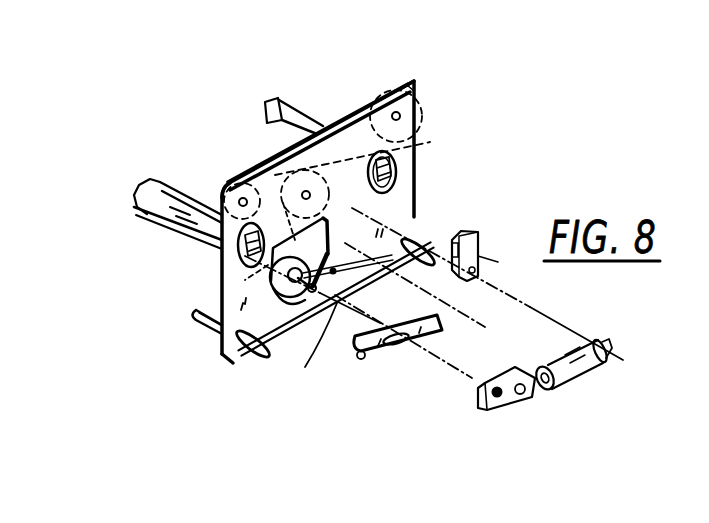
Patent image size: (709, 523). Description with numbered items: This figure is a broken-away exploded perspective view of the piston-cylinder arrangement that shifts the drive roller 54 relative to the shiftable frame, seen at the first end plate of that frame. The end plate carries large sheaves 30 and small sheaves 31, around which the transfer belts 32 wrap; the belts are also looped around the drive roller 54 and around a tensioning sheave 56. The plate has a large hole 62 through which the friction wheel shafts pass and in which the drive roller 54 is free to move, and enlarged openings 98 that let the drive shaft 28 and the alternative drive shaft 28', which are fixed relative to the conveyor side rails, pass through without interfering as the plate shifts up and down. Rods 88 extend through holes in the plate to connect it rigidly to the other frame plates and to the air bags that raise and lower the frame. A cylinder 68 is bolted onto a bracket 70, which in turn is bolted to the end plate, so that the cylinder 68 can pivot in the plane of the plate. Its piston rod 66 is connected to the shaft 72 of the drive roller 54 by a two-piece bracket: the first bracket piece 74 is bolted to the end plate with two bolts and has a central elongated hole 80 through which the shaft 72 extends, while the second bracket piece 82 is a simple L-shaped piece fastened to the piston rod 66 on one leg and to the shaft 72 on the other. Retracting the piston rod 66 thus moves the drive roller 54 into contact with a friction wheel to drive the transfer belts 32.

The drive shaft 28 is at (320, 222).
The alternative drive shaft 28' is at (141, 211).
The large sheaves 30 is at (223, 190).
The small sheaves 31 is at (327, 127).
The transfer belts 32 is at (353, 108).
The drive roller 54 is at (176, 238).
The tensioning sheave 56 is at (362, 217).
The hole 62 is at (336, 298).
The piston rod 66 is at (546, 387).
The cylinder 68 is at (583, 365).
The bracket 70 is at (478, 235).
The shaft of the drive roller 72 is at (309, 349).
The first bracket piece 74 is at (447, 313).
The central elongated hole 80 is at (398, 352).
The second bracket piece 82 is at (505, 370).
The rods 88 is at (198, 324).
The enlarged openings 98 is at (222, 268).